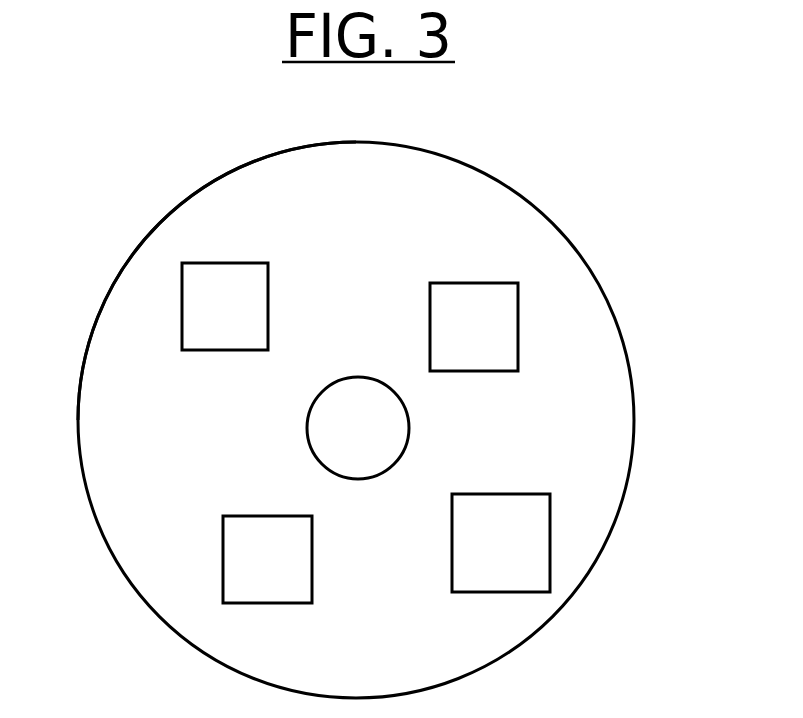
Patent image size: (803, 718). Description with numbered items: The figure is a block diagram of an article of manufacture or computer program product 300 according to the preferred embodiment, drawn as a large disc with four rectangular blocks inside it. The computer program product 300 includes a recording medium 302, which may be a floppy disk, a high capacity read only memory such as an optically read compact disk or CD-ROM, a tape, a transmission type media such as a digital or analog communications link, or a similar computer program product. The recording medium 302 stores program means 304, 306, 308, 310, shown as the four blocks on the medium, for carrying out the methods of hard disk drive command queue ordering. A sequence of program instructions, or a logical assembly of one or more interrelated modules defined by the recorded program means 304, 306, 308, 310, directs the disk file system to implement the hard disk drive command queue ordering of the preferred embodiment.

The computer program product 300 is at (598, 236).
The recording medium 302 is at (124, 265).
The program means 304 is at (267, 559).
The program means 306 is at (501, 543).
The program means 308 is at (474, 327).
The program means 310 is at (225, 306).